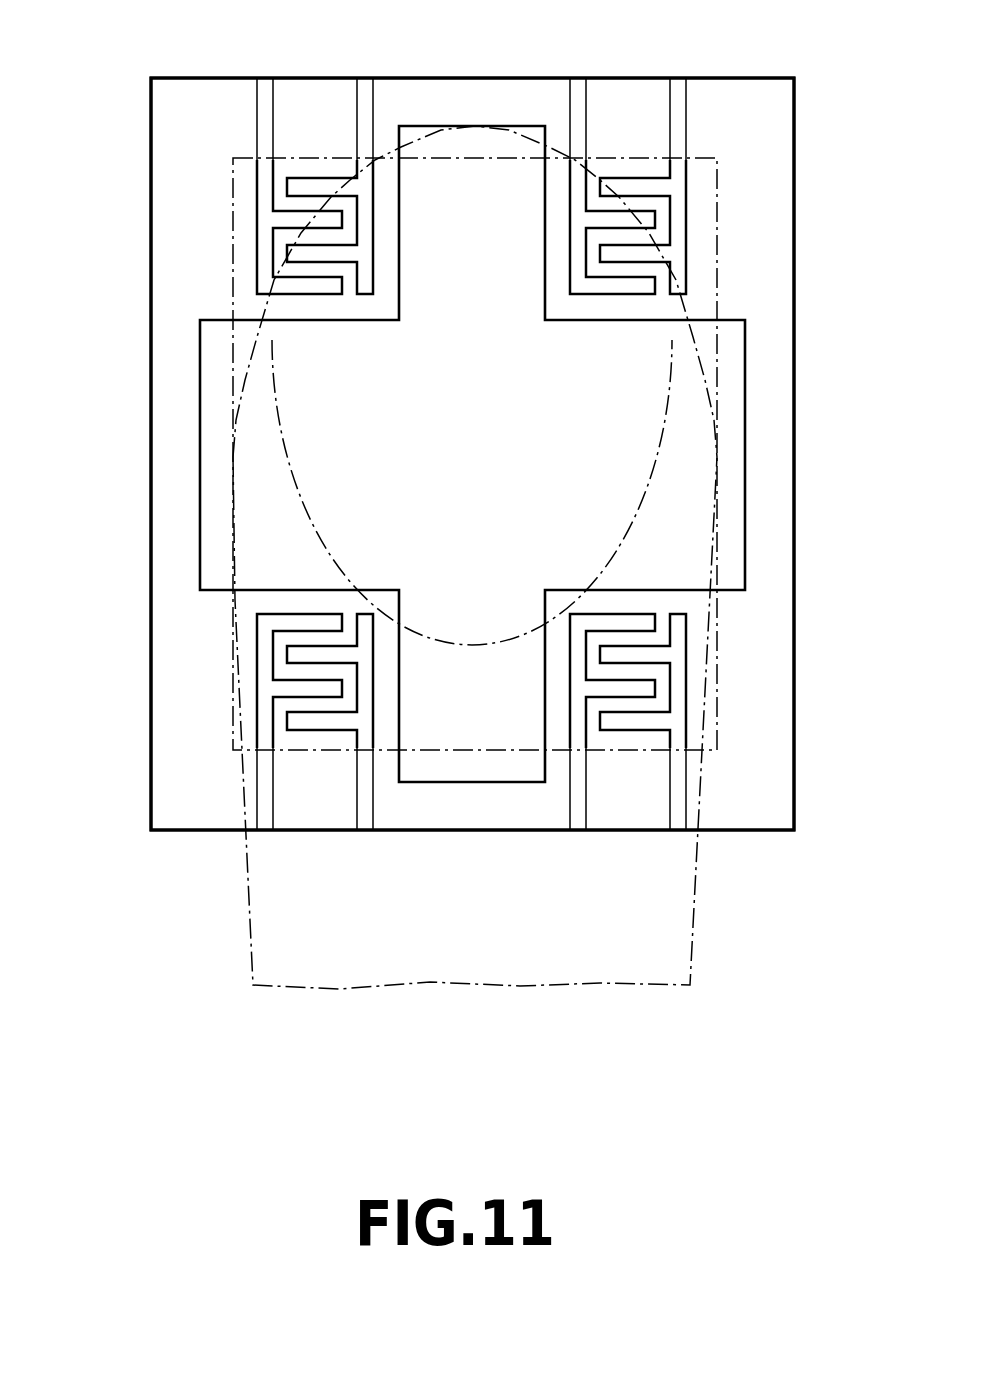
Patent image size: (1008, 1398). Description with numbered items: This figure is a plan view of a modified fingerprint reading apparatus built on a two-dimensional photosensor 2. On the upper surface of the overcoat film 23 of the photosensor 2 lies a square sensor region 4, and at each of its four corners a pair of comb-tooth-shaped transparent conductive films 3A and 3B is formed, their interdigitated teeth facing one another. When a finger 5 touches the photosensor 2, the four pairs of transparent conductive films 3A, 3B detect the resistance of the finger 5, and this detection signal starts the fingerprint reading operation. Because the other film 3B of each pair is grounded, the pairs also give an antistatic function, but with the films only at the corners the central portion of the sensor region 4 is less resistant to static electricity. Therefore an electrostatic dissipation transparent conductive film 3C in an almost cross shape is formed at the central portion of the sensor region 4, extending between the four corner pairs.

The two-dimensional photosensor 2 is at (800, 170).
The transparent conductive film 3A is at (577, 222).
The transparent conductive film 3B is at (367, 197).
The electrostatic dissipation transparent conductive film 3C is at (733, 477).
The sensor region 4 is at (703, 297).
The finger 5 is at (678, 923).
The overcoat film 23 is at (780, 352).